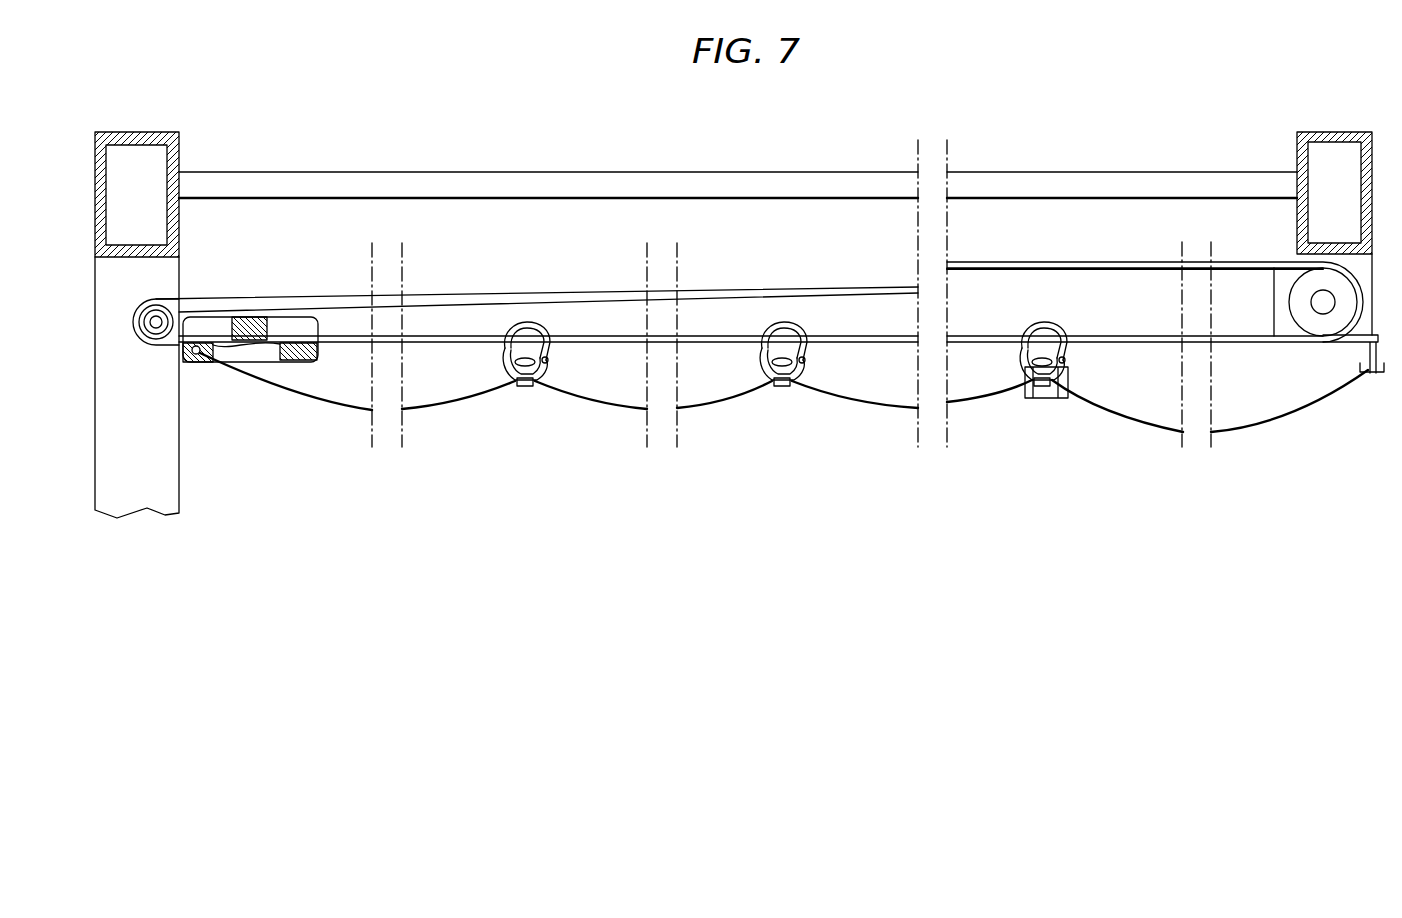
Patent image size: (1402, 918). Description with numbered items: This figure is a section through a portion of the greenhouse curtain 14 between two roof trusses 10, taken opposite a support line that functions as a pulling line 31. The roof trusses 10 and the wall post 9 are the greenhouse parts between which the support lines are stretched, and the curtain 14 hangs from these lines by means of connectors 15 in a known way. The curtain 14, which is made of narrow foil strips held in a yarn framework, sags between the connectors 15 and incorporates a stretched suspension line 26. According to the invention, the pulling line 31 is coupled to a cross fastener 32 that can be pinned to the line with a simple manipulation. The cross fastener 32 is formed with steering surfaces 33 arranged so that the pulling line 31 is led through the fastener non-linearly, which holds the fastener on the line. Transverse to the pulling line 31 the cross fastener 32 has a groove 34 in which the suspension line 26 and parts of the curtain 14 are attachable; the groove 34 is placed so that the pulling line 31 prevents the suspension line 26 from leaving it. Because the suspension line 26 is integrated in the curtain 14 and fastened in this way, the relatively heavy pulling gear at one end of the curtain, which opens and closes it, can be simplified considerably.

The wall post 9 is at (170, 490).
The roof truss 10 is at (121, 132).
The greenhouse curtain 14 is at (421, 409).
The connector 15 is at (517, 321).
The suspension line 26 is at (199, 362).
The pulling line 31 is at (578, 293).
The cross fastener 32 is at (283, 300).
The steering surface 33 is at (244, 317).
The groove 34 is at (190, 360).